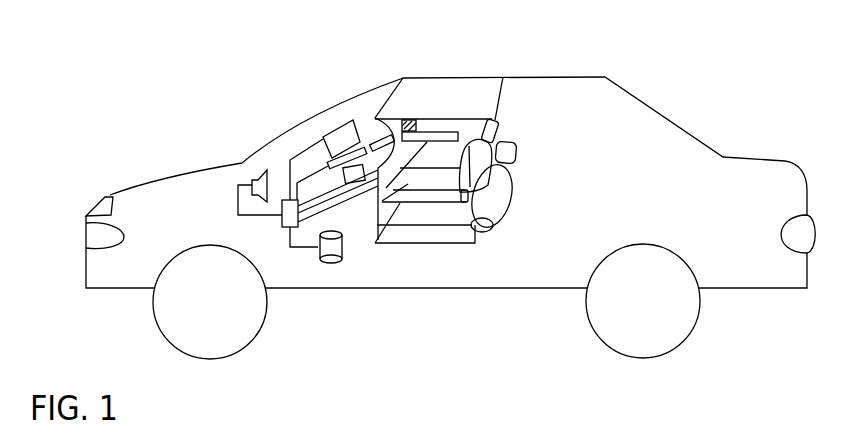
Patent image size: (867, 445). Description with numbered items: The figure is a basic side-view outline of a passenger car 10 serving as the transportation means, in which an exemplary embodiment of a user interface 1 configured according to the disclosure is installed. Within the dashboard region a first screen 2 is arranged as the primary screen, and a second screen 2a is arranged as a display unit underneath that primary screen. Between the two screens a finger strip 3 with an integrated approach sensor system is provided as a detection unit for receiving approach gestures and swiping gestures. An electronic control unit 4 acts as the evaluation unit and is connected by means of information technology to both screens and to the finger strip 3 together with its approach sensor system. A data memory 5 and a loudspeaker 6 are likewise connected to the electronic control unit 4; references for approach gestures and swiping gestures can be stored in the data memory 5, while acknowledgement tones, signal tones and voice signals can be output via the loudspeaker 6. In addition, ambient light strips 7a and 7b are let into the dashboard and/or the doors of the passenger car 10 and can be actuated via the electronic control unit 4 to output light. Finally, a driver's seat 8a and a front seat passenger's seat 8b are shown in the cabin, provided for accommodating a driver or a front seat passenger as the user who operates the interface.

The passenger car 10 is at (702, 82).
The user interface 1 is at (271, 125).
The first screen 2 is at (327, 137).
The second screen 2a is at (357, 181).
The finger strip 3 is at (352, 153).
The electronic control unit 4 is at (285, 227).
The data memory 5 is at (332, 264).
The loudspeaker 6 is at (255, 178).
The ambient light strip 7a is at (374, 145).
The ambient light strip 7b is at (442, 135).
The driver's seat 8a is at (450, 233).
The front seat passenger's seat 8b is at (488, 142).